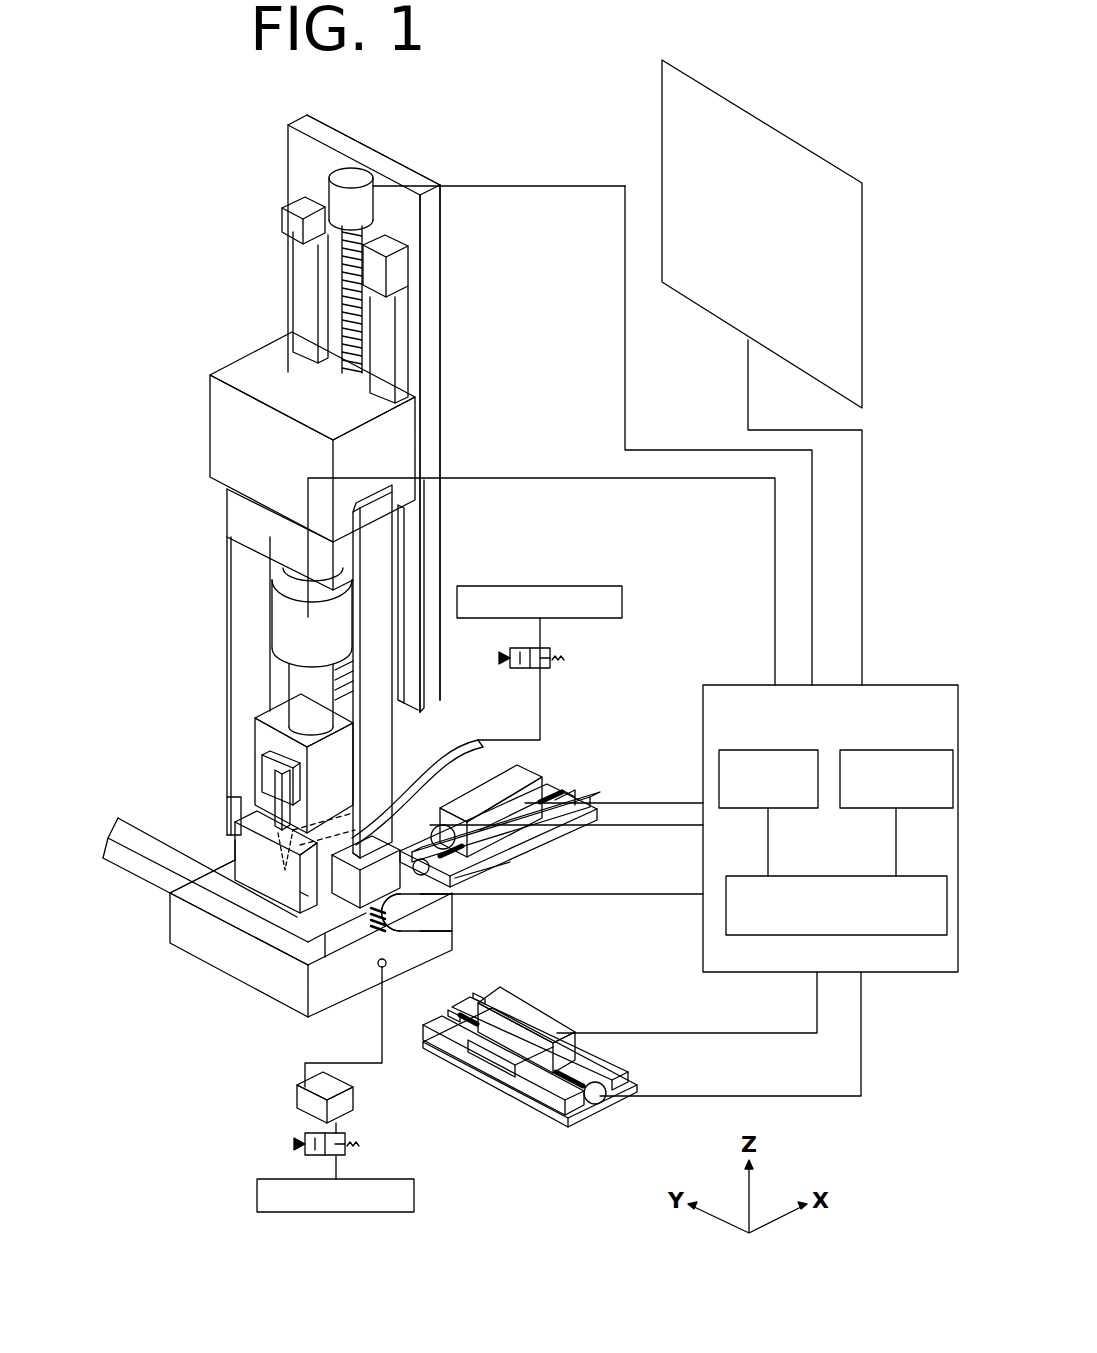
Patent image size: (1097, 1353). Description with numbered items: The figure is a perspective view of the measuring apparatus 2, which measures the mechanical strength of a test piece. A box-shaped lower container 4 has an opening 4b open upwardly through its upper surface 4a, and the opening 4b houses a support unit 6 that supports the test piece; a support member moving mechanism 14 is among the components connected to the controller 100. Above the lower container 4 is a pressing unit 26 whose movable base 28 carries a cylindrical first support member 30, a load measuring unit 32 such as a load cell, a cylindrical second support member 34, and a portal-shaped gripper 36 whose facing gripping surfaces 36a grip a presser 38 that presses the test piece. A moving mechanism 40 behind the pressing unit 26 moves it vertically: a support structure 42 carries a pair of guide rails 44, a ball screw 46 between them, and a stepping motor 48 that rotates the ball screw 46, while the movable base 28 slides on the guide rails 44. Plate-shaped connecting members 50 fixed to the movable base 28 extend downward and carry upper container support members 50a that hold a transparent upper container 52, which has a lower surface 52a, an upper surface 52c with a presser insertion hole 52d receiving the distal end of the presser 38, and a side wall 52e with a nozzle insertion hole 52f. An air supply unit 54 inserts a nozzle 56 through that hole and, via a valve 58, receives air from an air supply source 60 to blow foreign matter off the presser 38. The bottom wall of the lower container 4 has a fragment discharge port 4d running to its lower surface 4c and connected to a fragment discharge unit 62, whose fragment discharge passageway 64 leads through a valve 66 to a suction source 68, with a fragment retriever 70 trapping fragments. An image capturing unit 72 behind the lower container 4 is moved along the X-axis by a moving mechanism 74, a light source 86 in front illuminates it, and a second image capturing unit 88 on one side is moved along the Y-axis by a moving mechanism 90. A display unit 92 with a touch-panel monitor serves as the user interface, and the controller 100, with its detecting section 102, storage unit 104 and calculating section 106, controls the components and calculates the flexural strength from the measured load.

The measuring apparatus 2 is at (105, 252).
The lower container 4 is at (455, 925).
The upper surface 4a is at (455, 900).
The opening 4b is at (448, 930).
The lower surface 4c is at (420, 950).
The fragment discharge port 4d is at (380, 967).
The support unit 6 is at (323, 873).
The support member moving mechanism 14 is at (480, 875).
The pressing unit 26 is at (243, 347).
The movable base 28 is at (228, 420).
The first support member 30 is at (290, 580).
The load measuring unit 32 is at (270, 620).
The second support member 34 is at (305, 693).
The gripper 36 is at (268, 740).
The gripping surfaces 36a is at (325, 768).
The presser 38 is at (272, 797).
The moving mechanism 40 is at (428, 163).
The support structure 42 is at (433, 318).
The guide rails 44 is at (295, 210).
The ball screw 46 is at (343, 265).
The stepping motor 48 is at (352, 175).
The connecting members 50 is at (390, 540).
The upper container support members 50a is at (240, 810).
The upper container 52 is at (200, 945).
The lower surface 52a is at (165, 893).
The upper surface 52c is at (232, 845).
The presser insertion hole 52d is at (340, 830).
The side wall 52e is at (268, 878).
The nozzle insertion hole 52f is at (375, 878).
The air supply unit 54 is at (612, 637).
The nozzle 56 is at (458, 740).
The valve 58 is at (553, 662).
The air supply source 60 is at (537, 586).
The fragment discharge unit 62 is at (280, 1100).
The fragment discharge passageway 64 is at (383, 1035).
The valve 66 is at (297, 1145).
The suction source 68 is at (334, 1213).
The fragment retriever 70 is at (335, 1105).
The image capturing unit 72 is at (510, 775).
The moving mechanism 74 is at (580, 842).
The light source 86 is at (100, 853).
The image capturing unit 88 is at (550, 1010).
The moving mechanism 90 is at (492, 1100).
The display unit 92 is at (790, 140).
The controller 100 is at (873, 682).
The detecting section 102 is at (738, 750).
The storage unit 104 is at (822, 876).
The calculating section 106 is at (900, 750).